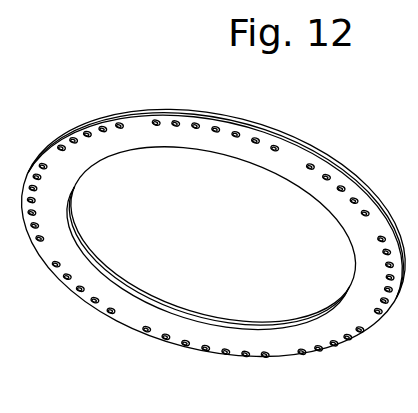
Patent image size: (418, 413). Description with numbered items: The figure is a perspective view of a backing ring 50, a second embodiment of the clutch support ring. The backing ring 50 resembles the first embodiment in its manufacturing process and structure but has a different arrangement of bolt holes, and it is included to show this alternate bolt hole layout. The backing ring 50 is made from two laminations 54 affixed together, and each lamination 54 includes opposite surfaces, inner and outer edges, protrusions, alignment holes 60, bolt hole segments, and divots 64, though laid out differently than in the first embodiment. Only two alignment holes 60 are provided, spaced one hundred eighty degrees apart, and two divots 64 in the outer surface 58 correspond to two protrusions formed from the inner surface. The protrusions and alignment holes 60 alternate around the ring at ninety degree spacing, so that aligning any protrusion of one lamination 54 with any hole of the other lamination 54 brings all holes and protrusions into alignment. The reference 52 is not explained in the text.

The backing ring 50 is at (209, 225).
The outer lip 52 is at (285, 139).
The laminations 54 is at (150, 140).
The outer surface 58 is at (53, 245).
The alignment holes 60 is at (224, 125).
The divots 64 is at (27, 201).